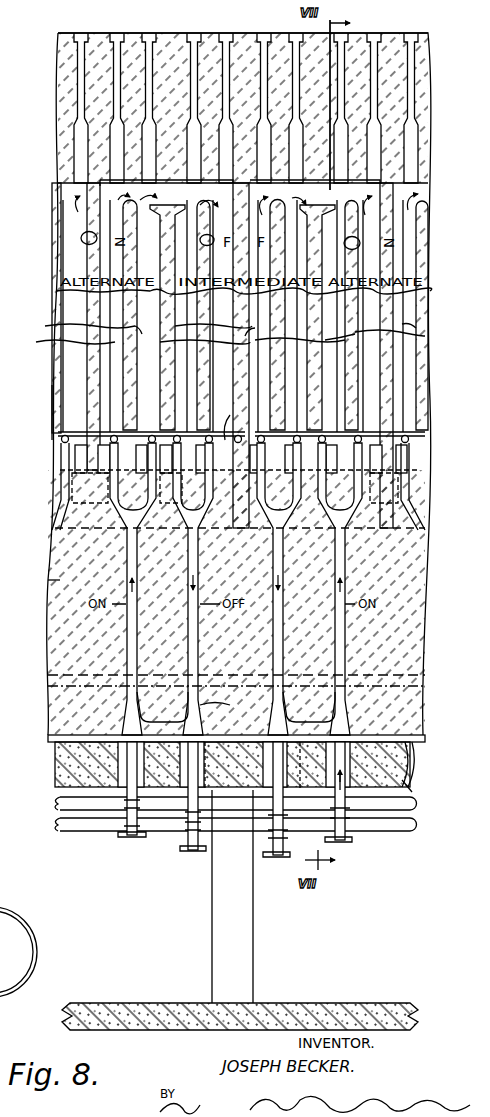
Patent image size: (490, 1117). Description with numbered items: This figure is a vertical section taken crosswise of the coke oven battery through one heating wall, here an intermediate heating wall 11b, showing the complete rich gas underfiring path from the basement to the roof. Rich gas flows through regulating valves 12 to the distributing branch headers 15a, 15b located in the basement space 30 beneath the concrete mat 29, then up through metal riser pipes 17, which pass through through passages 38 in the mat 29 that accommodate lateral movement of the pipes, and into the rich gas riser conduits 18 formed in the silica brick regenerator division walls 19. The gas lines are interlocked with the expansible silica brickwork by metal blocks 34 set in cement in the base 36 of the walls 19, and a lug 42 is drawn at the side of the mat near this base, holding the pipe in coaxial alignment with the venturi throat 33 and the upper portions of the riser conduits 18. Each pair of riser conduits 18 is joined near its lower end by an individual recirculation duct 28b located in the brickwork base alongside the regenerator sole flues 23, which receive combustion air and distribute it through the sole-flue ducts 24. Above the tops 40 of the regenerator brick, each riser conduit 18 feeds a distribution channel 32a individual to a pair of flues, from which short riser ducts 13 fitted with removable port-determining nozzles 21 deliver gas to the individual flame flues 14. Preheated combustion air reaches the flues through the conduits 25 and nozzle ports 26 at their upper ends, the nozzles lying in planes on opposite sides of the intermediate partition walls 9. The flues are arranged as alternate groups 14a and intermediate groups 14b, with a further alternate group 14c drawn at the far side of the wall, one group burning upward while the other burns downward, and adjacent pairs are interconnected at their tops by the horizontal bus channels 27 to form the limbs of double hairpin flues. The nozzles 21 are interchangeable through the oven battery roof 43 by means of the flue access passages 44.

The oven battery roof 43 is at (234, 33).
The flue access passages 44 is at (145, 94).
The horizontal bus channels 27 is at (62, 190).
The flame flues 14 is at (105, 255).
The alternate group of flues 14a is at (50, 326).
The intermediate group of flues 14b is at (219, 326).
The slider member alternate 14c is at (340, 323).
The intermediate heating wall 11b is at (54, 400).
The intermediate partition walls 9 is at (92, 402).
The nozzle ports 26 is at (221, 419).
The removable port-determining nozzles 21 is at (118, 430).
The riser ducts 13 is at (68, 460).
The conduits 25 is at (58, 490).
The tops of regenerator brick 40 is at (56, 528).
The distribution channel 32a is at (238, 589).
The regenerator division walls 19 is at (58, 585).
The rich gas riser conduits 18 is at (188, 628).
The sole-flue ducts 24 is at (50, 675).
The regenerator sole flues 23 is at (50, 686).
The venturi throat 33 is at (228, 720).
The regulating valves 12 is at (196, 728).
The metal blocks 34 is at (50, 736).
The concrete mat 29 is at (55, 752).
The base of silica walls 36 is at (420, 764).
The lug 42 is at (416, 789).
The distributing branch header 15b is at (58, 797).
The distributing branch header 15a is at (62, 831).
The through passages 38 is at (118, 760).
The recirculation duct 28b is at (178, 760).
The metal riser pipes 17 is at (296, 805).
The basement space 30 is at (182, 925).